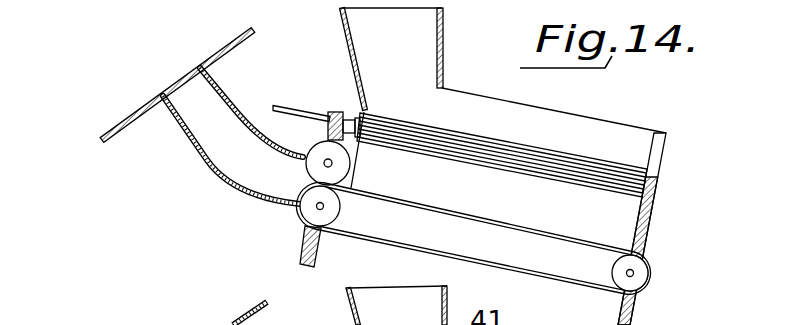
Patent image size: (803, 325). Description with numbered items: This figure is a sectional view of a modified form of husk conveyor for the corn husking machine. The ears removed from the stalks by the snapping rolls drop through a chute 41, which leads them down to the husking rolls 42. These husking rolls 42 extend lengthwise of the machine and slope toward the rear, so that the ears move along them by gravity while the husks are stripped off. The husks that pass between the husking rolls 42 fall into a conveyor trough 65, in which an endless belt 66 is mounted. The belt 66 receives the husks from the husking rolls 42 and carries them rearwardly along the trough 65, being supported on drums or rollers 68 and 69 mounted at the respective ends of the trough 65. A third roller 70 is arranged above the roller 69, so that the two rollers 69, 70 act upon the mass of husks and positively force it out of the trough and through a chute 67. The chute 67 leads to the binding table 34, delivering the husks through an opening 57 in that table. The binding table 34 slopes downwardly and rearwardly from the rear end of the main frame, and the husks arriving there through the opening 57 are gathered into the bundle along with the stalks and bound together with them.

The binding table 34 is at (137, 113).
The opening 57 is at (183, 76).
The chute 67 is at (250, 199).
The chute 41 is at (444, 64).
The husking rolls 42 is at (482, 145).
The conveyor trough 65 is at (508, 206).
The endless belt 66 is at (522, 230).
The drum or roller 68 is at (642, 276).
The drum or roller 69 is at (330, 212).
The third roller 70 is at (338, 170).